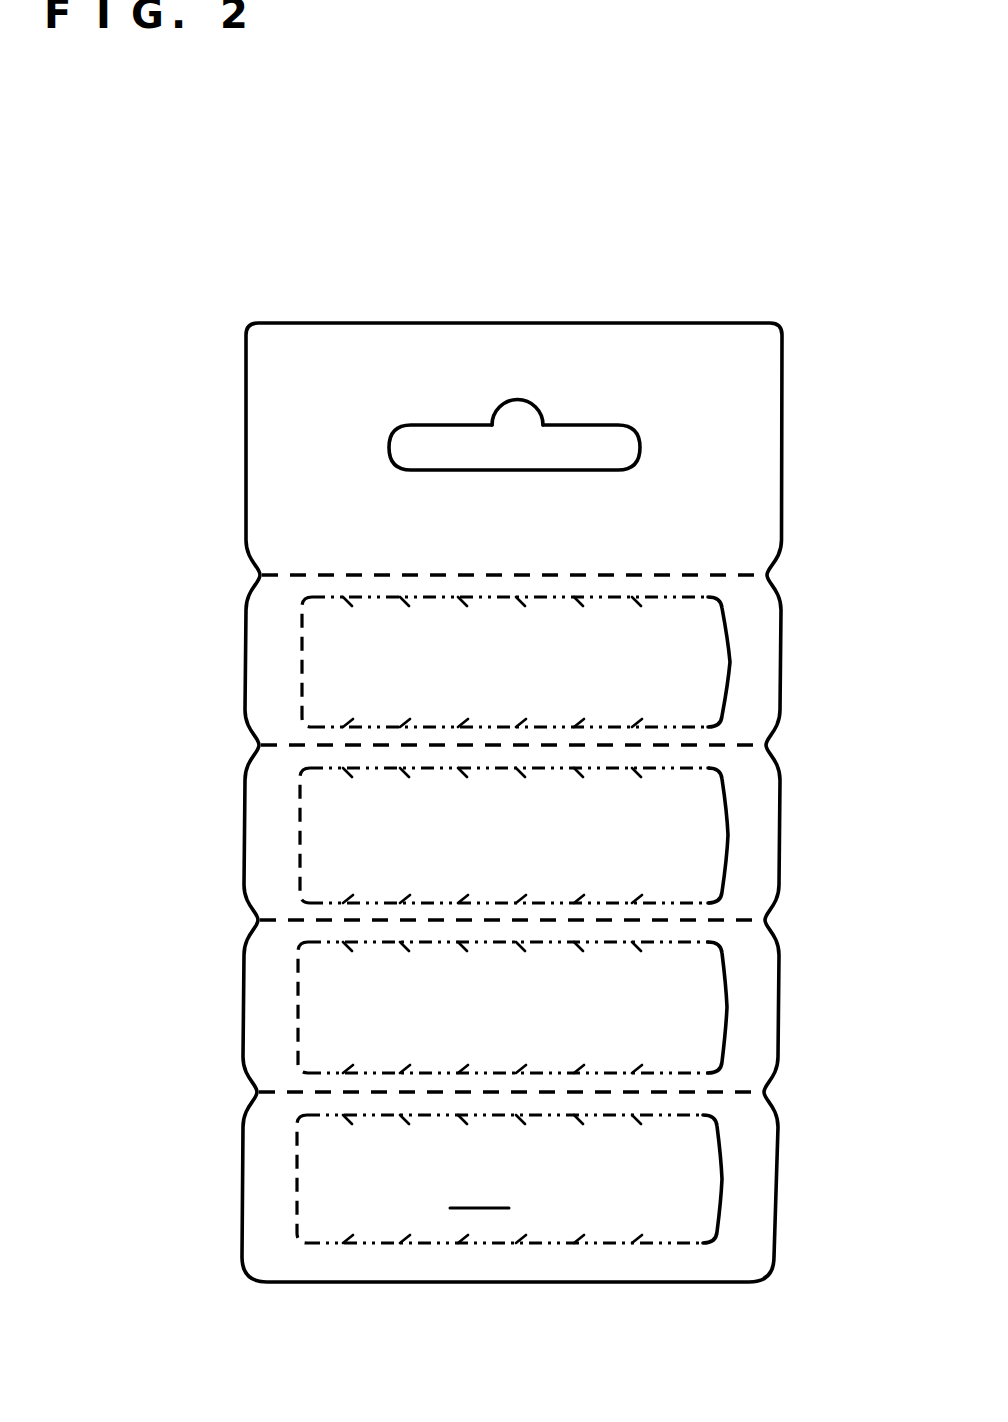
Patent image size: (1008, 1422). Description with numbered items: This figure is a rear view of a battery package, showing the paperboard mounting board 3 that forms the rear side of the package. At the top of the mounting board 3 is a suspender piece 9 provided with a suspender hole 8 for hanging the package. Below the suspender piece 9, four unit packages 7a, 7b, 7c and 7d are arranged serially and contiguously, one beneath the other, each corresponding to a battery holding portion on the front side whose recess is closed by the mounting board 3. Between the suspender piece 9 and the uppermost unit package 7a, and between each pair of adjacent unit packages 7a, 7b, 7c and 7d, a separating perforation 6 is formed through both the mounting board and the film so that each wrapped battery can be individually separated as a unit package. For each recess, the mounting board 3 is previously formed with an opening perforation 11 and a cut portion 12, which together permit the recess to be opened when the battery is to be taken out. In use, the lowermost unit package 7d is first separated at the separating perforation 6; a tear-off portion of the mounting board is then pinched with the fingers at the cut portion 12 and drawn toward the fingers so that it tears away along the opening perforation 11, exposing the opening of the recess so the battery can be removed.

The mounting board 3 is at (283, 357).
The suspender hole 8 is at (521, 417).
The suspender piece 9 is at (750, 362).
The separating perforation 6 is at (300, 575).
The unit package 7a is at (757, 637).
The unit package 7b is at (757, 838).
The unit package 7c is at (757, 992).
The lowermost unit package 7d is at (750, 1173).
The opening perforation 11 is at (191, 1223).
The cut portion 12 is at (722, 797).